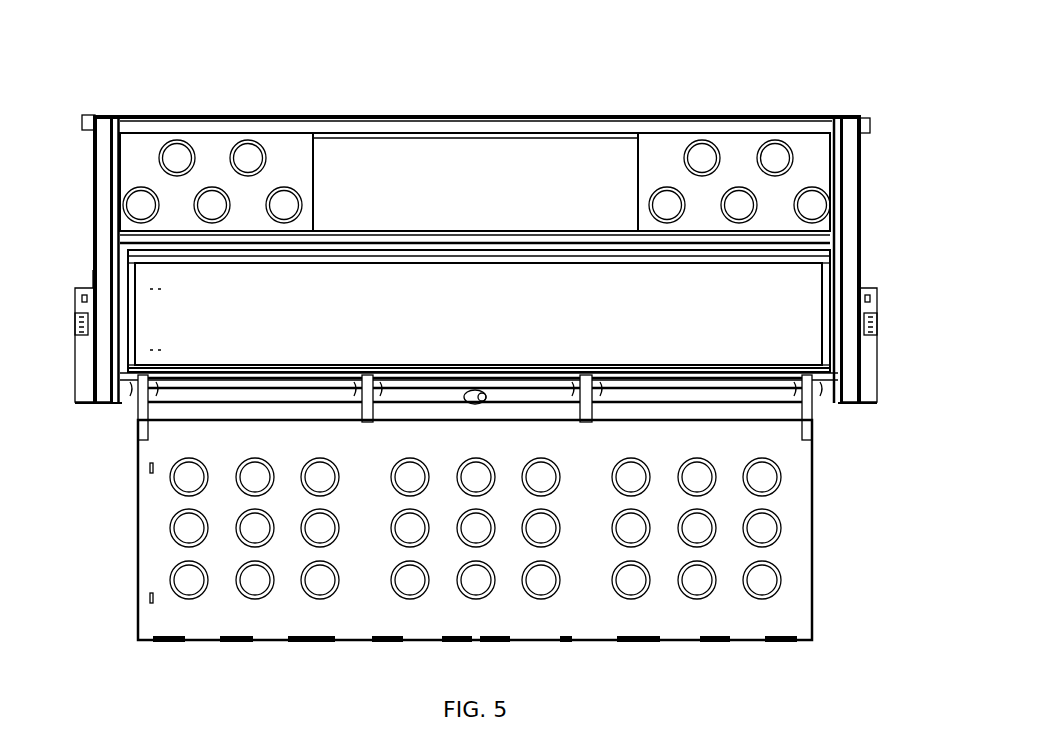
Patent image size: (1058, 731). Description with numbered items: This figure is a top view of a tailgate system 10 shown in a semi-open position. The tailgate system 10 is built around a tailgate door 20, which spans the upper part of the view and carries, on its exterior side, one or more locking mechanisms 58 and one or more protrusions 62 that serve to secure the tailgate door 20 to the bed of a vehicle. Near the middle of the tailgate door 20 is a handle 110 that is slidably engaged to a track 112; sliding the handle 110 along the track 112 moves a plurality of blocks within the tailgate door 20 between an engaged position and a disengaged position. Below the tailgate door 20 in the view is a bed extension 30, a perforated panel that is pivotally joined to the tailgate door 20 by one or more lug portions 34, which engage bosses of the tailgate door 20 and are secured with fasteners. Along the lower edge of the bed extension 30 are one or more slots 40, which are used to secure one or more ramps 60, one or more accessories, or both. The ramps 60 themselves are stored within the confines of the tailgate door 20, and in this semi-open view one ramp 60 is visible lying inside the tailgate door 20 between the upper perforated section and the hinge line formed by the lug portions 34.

The tailgate system 10 is at (150, 77).
The tailgate door 20 is at (100, 198).
The bed extension 30 is at (798, 547).
The lug portions 34 is at (145, 403).
The slots 40 is at (163, 643).
The locking mechanisms 58 is at (75, 318).
The ramps 60 is at (300, 310).
The protrusions 62 is at (82, 118).
The handle 110 is at (483, 393).
The track 112 is at (468, 392).